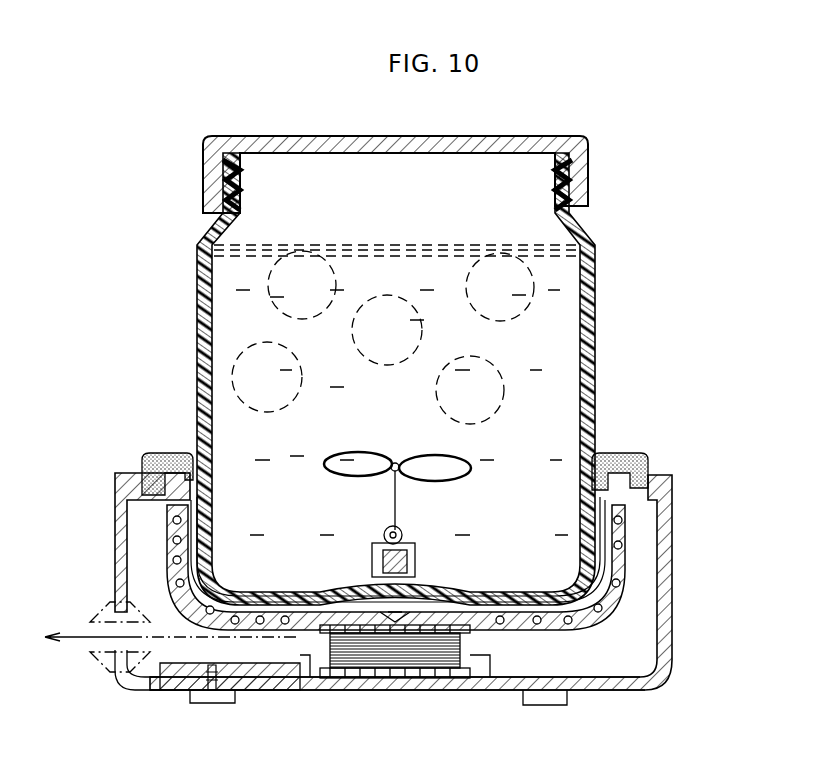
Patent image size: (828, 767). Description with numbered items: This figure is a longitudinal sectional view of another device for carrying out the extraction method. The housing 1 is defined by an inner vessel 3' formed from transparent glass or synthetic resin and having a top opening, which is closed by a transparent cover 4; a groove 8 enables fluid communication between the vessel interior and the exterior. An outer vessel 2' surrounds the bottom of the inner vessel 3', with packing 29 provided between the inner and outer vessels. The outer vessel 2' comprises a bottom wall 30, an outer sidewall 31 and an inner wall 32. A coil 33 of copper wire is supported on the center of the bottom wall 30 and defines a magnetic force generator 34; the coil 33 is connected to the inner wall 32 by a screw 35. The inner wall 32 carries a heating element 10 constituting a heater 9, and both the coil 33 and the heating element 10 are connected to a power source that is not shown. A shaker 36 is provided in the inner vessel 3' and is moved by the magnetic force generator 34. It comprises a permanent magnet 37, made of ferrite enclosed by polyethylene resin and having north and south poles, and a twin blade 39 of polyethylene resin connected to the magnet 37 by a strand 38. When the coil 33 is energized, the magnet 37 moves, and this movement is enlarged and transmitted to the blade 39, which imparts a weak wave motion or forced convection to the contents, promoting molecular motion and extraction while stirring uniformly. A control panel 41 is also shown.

The housing 1 is at (197, 388).
The outer vessel 2' is at (418, 581).
The inner vessel 3' is at (426, 379).
The cover 4 is at (589, 141).
The groove 8 is at (575, 167).
The heater 9 is at (583, 623).
The heating element 10 is at (622, 583).
The packing 29 is at (648, 462).
The bottom wall 30 is at (672, 666).
The outer sidewall 31 is at (665, 506).
The inner wall 32 is at (605, 608).
The coil 33 is at (440, 665).
The magnetic force generator 34 is at (378, 655).
The screw 35 is at (395, 622).
The shaker 36 is at (372, 520).
The permanent magnet 37 is at (408, 565).
The strand 38 is at (395, 512).
The twin blade 39 is at (455, 462).
The control panel 41 is at (190, 680).